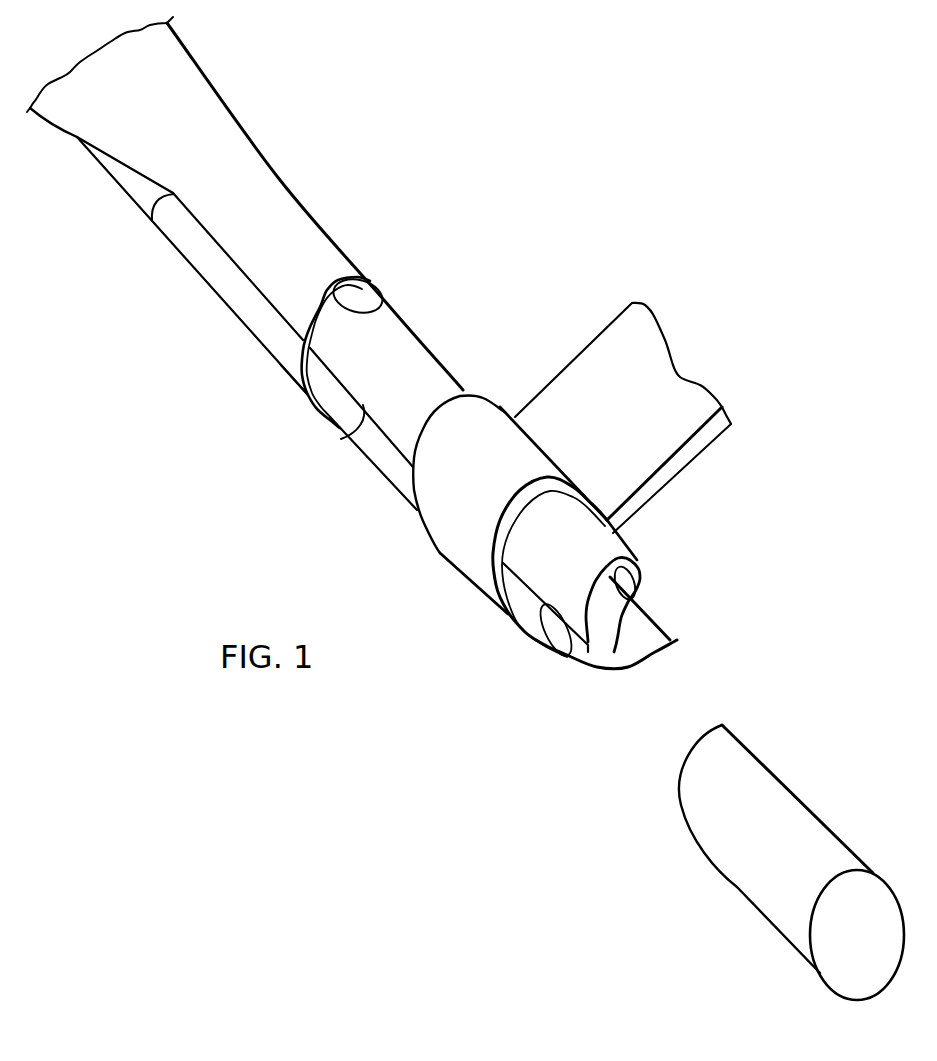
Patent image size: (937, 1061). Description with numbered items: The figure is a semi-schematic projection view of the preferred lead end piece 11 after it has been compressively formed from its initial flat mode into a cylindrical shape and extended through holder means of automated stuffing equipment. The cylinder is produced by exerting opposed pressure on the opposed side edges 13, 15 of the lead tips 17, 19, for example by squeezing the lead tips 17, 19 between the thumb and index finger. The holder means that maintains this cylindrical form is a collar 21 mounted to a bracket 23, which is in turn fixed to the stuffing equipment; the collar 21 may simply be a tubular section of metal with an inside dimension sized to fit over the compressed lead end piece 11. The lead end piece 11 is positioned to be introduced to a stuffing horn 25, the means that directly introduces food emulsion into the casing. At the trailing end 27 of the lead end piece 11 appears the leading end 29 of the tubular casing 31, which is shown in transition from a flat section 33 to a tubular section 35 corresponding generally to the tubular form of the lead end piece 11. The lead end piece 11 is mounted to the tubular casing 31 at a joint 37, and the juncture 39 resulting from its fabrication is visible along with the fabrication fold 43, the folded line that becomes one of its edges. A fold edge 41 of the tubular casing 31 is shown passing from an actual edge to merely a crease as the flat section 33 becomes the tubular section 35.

The lead end piece 11 is at (375, 452).
The side edge 13 is at (640, 602).
The side edge 15 is at (566, 657).
The lead tip 17 is at (678, 640).
The lead tip 19 is at (587, 648).
The collar 21 is at (462, 562).
The bracket 23 is at (695, 457).
The stuffing horn 25 is at (737, 886).
The trailing end 27 is at (352, 297).
The leading end 29 is at (383, 297).
The tubular casing 31 is at (297, 80).
The flat section 33 is at (73, 113).
The tubular section 35 is at (243, 307).
The joint 37 is at (306, 394).
The juncture 39 is at (341, 437).
The fold edge 41 is at (152, 221).
The fabrication fold 43 is at (614, 576).